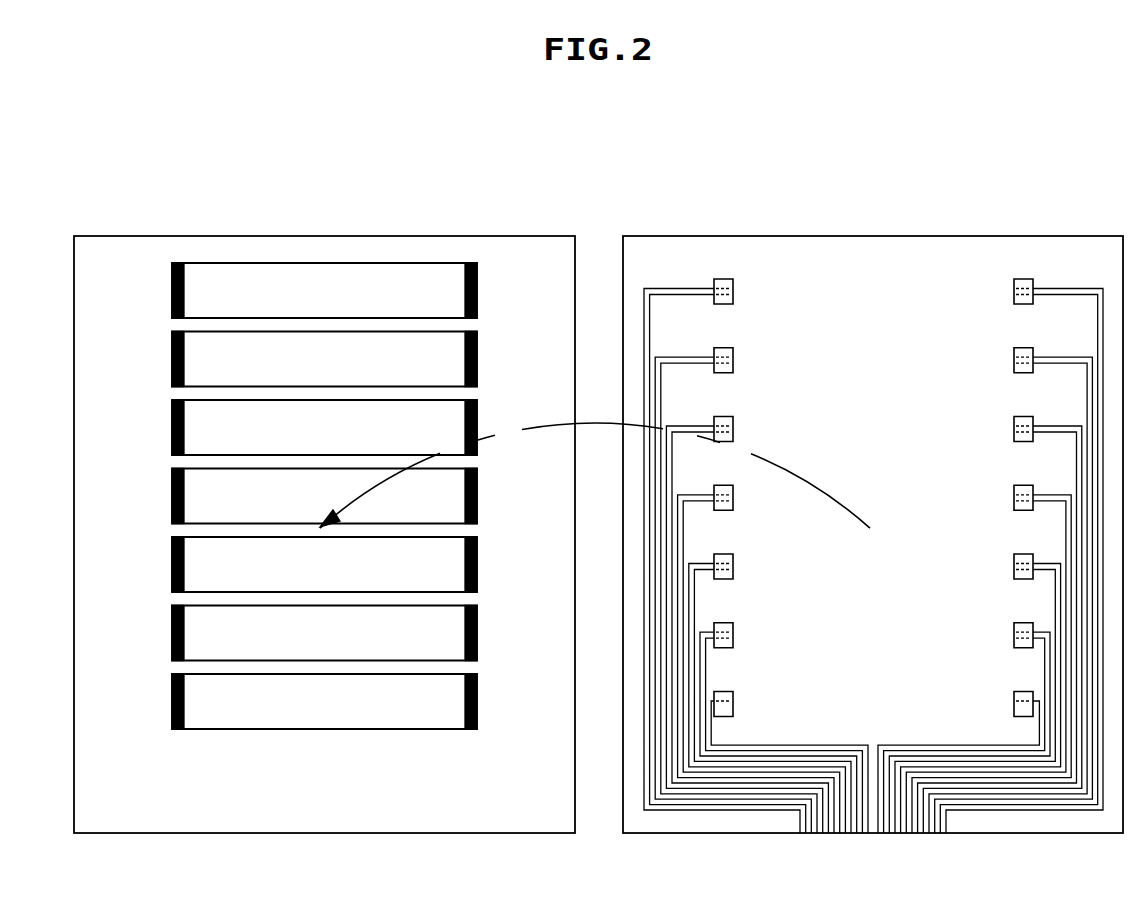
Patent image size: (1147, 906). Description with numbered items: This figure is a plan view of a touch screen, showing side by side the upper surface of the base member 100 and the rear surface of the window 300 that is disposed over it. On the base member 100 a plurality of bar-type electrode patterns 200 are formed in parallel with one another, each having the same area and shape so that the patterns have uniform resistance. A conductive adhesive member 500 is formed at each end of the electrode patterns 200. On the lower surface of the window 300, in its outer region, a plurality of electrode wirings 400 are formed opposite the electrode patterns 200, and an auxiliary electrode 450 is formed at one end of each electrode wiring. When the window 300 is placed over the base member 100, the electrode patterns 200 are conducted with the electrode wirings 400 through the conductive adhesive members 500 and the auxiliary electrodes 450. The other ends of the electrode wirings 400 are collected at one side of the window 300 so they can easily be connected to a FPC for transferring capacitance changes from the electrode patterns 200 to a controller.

The base member 100 is at (553, 250).
The electrode patterns 200 is at (370, 280).
The conductive adhesive members 500 is at (478, 287).
The window 300 is at (813, 248).
The electrode wirings 400 is at (662, 290).
The auxiliary electrodes 450 is at (718, 282).